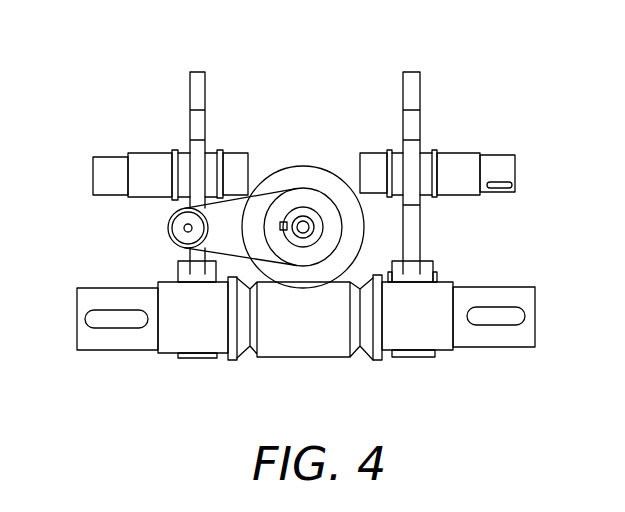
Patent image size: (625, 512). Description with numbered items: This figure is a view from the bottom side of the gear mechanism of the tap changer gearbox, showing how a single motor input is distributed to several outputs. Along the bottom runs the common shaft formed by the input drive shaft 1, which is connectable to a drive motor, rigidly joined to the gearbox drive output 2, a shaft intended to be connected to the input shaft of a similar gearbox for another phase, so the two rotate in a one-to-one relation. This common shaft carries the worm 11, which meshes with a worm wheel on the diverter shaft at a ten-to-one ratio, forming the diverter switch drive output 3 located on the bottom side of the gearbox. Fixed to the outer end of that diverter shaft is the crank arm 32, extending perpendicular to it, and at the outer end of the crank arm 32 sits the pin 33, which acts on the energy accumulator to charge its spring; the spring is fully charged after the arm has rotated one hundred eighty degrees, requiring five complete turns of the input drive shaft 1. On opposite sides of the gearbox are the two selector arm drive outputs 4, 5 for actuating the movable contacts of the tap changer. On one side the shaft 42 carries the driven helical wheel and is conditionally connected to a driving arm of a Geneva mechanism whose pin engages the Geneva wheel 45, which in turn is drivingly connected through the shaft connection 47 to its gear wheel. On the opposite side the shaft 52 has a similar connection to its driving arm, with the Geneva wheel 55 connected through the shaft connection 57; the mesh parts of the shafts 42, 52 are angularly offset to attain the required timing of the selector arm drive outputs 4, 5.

The input drive shaft 1 is at (123, 337).
The gearbox drive output 2 is at (500, 293).
The diverter switch drive output 3 is at (307, 112).
The selector arm drive output 4 is at (78, 138).
The selector arm drive output 5 is at (497, 112).
The worm 11 is at (318, 343).
The crank arm 32 is at (238, 238).
The pin 33 is at (185, 228).
The shaft 42 is at (208, 160).
The Geneva wheel 45 is at (200, 84).
The shaft connection 47 is at (100, 173).
The shaft 52 is at (393, 153).
The Geneva wheel 55 is at (412, 85).
The shaft connection 57 is at (505, 162).